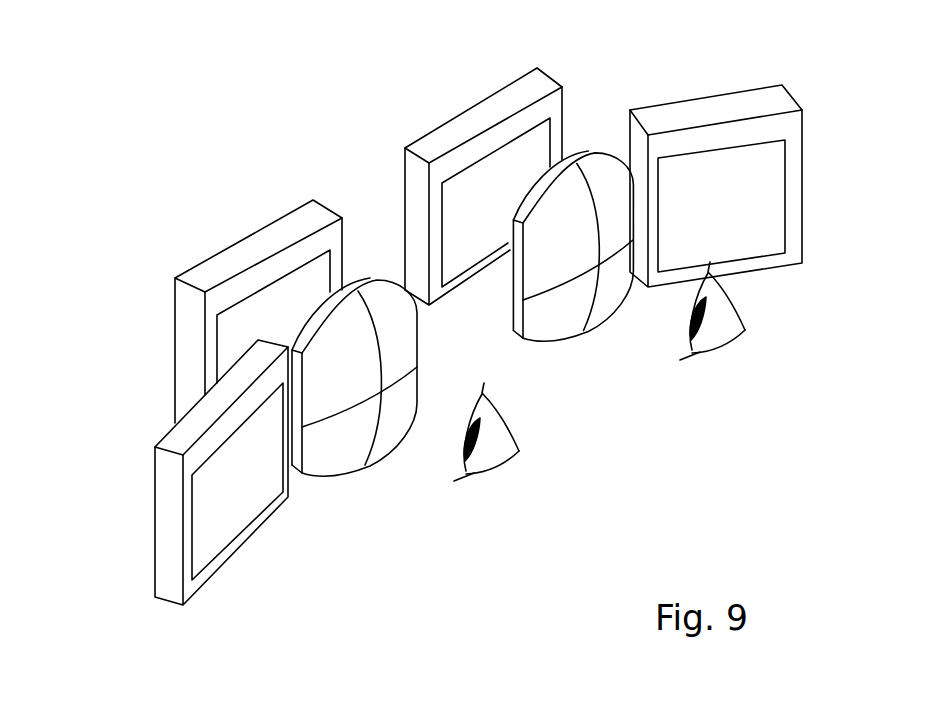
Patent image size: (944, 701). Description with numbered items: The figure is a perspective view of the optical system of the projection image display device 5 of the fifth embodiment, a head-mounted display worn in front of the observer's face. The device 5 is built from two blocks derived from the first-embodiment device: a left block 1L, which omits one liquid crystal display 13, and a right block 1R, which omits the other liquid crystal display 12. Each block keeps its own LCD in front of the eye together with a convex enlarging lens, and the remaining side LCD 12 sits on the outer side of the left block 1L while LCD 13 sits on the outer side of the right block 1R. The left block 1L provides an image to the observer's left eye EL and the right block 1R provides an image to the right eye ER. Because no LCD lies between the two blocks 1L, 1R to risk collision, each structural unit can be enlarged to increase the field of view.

The projection image display device 5 is at (455, 311).
The block 1L is at (228, 383).
The block 1R is at (637, 223).
The liquid crystal display 12 is at (207, 542).
The liquid crystal display 13 is at (770, 227).
The left eye EL is at (485, 480).
The right eye ER is at (715, 350).